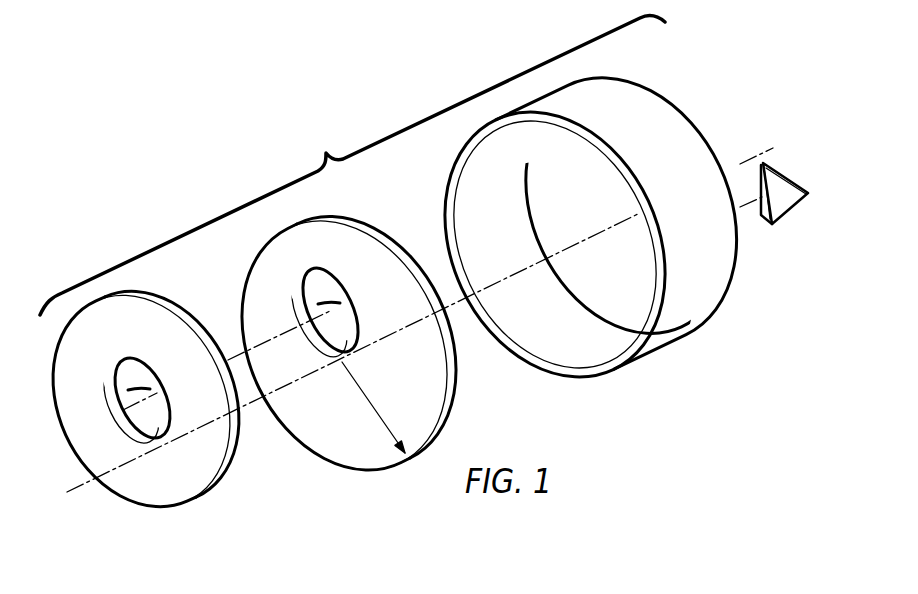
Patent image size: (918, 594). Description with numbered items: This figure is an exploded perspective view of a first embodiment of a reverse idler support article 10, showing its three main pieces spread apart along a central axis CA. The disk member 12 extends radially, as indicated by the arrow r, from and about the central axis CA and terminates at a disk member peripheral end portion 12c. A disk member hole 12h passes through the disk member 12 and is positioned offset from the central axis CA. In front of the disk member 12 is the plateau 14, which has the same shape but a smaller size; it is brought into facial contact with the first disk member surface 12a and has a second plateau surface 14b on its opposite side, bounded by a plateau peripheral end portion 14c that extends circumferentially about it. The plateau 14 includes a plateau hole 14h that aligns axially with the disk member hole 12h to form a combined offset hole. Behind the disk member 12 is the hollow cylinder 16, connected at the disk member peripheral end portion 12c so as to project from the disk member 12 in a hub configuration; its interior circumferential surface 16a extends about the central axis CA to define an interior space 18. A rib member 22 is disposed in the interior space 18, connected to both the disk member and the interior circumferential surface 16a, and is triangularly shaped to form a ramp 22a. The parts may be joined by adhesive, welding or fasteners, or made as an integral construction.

The reverse idler support article 10 is at (352, 165).
The disk member 12 is at (268, 273).
The first disk member surface 12a is at (318, 437).
The disk member peripheral end portion 12c is at (275, 238).
The disk member hole 12h is at (330, 298).
The plateau 14 is at (93, 300).
The second plateau surface 14b is at (75, 345).
The plateau peripheral end portion 14c is at (202, 493).
The plateau hole 14h is at (142, 387).
The hollow cylinder 16 is at (572, 97).
The interior circumferential surface 16a is at (548, 337).
The interior space 18 is at (500, 223).
The rib member 22 is at (784, 202).
The ramp 22a is at (785, 172).
The central axis CA is at (404, 328).
The radial direction arrow r is at (380, 415).